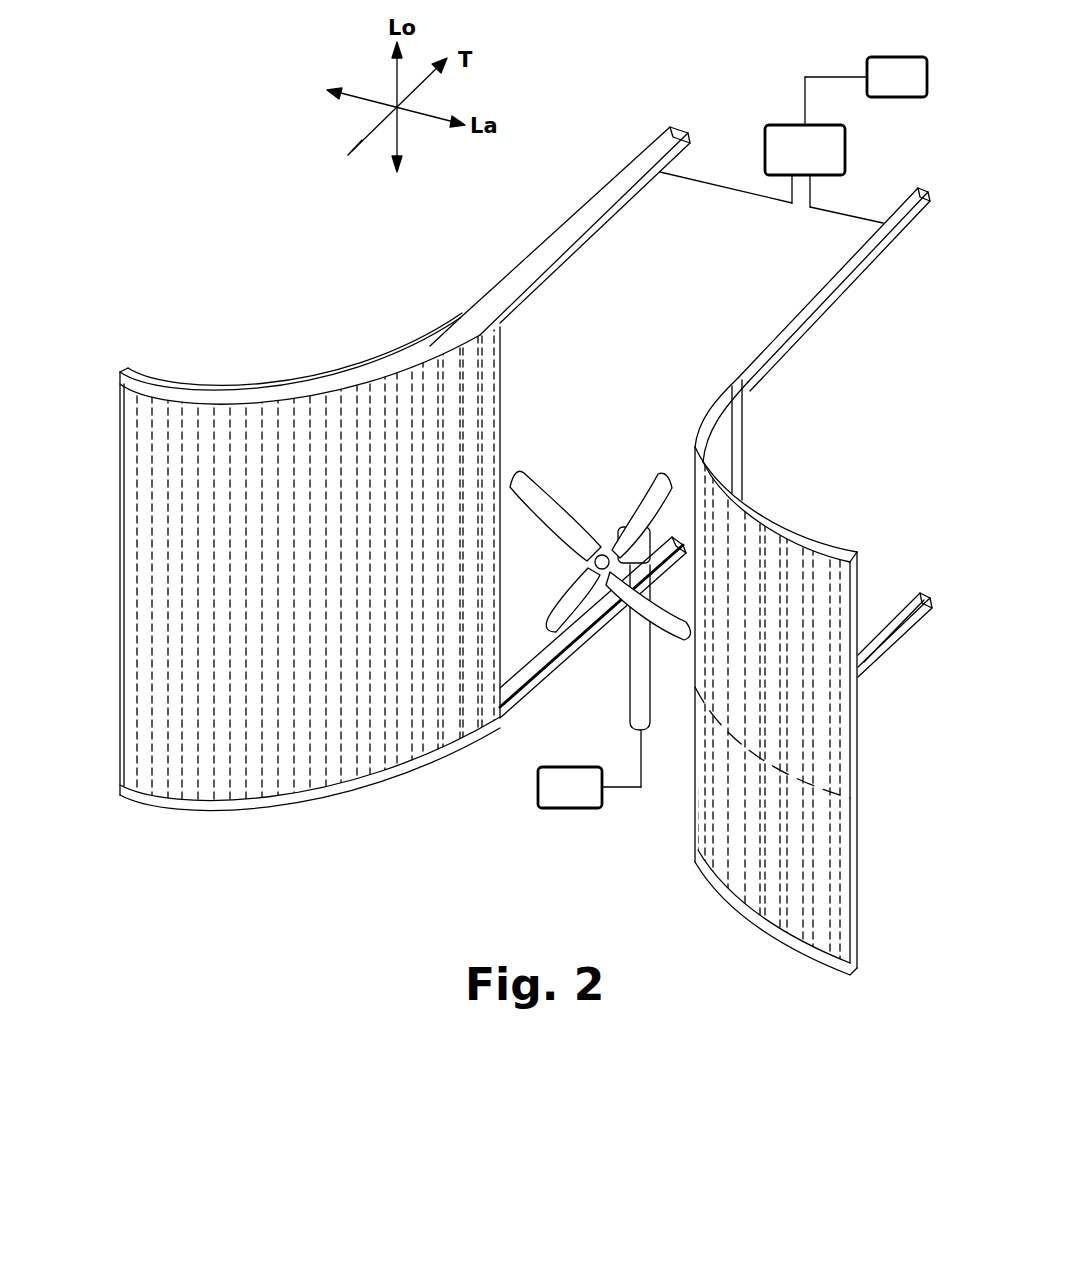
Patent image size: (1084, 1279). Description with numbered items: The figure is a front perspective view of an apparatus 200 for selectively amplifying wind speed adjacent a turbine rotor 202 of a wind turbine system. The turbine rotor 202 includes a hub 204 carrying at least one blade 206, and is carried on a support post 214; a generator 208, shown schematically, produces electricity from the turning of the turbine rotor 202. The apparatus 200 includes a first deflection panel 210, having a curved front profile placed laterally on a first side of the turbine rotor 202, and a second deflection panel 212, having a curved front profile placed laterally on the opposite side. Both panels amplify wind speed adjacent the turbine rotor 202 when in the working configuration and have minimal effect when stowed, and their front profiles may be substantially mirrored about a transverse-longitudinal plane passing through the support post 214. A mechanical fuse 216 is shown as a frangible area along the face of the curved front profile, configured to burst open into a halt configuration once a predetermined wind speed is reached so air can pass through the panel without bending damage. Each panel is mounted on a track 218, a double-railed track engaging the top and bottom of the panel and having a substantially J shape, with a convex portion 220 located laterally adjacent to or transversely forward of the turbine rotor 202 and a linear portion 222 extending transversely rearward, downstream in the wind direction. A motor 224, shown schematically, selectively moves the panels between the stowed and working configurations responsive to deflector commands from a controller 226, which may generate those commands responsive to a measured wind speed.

The apparatus 200 is at (780, 1045).
The turbine rotor 202 is at (757, 96).
The hub 204 is at (599, 540).
The blade 206 is at (632, 501).
The generator 208 is at (590, 801).
The first deflection panel 210 is at (92, 583).
The second deflection panel 212 is at (880, 879).
The support post 214 is at (632, 696).
The mechanical fuse 216 is at (770, 758).
The track 218 is at (478, 287).
The convex portion 220 is at (424, 800).
The linear portion 222 is at (662, 196).
The motor 224 is at (825, 164).
The controller 226 is at (917, 91).